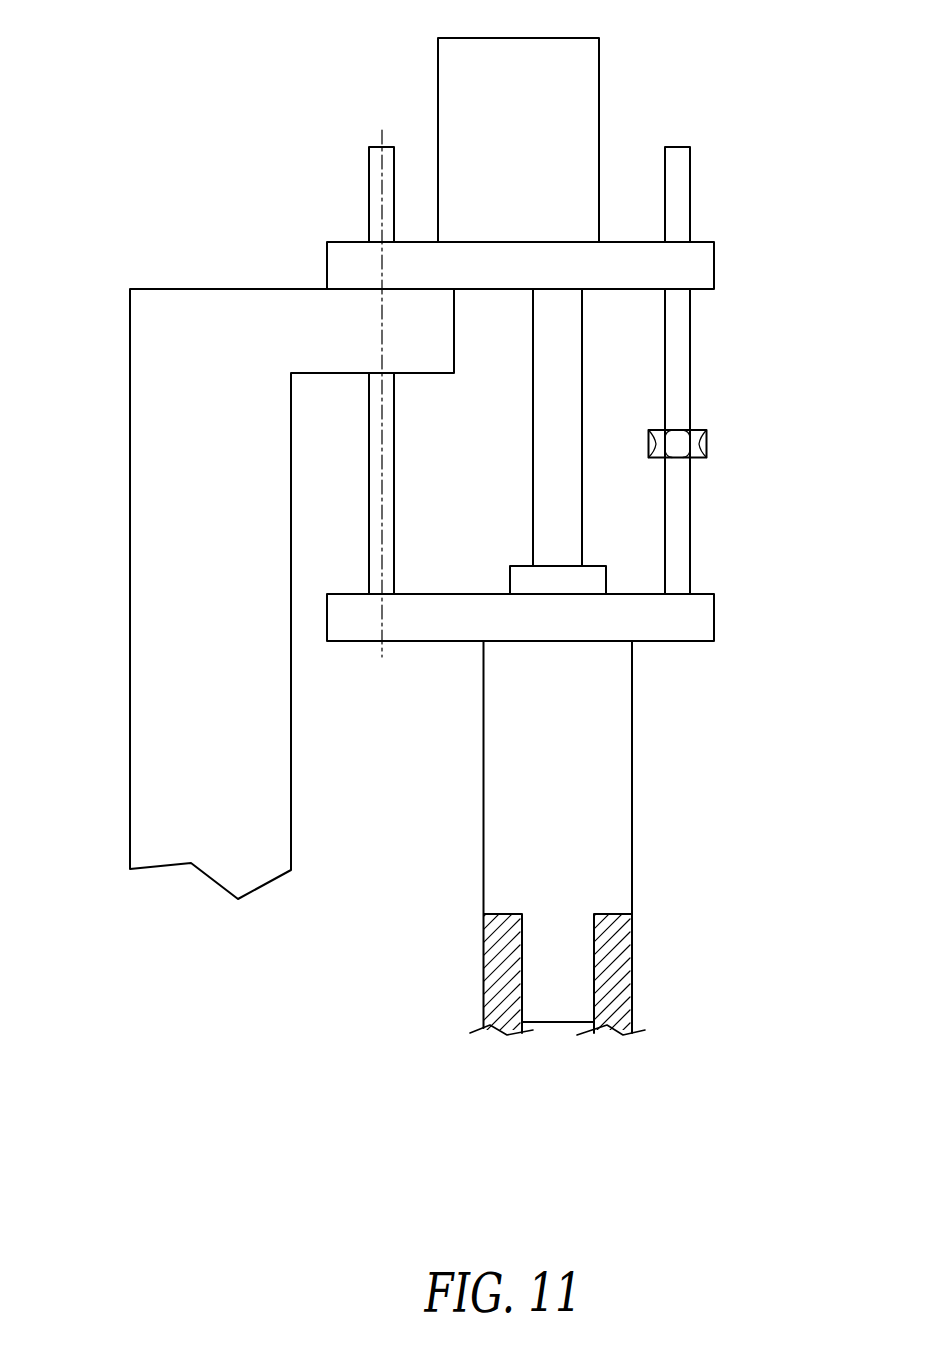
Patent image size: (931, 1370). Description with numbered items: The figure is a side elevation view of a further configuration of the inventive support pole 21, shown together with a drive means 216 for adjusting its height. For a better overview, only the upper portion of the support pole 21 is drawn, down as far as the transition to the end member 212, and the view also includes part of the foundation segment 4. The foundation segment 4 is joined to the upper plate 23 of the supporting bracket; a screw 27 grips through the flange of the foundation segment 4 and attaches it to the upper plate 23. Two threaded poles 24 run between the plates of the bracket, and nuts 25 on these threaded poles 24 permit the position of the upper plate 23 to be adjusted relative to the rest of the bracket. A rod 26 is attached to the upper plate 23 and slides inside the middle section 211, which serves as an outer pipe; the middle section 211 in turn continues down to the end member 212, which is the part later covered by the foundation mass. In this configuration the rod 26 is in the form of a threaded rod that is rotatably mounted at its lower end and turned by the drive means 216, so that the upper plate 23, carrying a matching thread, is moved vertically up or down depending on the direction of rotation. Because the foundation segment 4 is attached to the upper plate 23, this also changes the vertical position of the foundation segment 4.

The foundation segment 4 is at (192, 628).
The support pole 21 is at (610, 1010).
The upper plate 23 is at (703, 262).
The threaded pole 24 is at (675, 172).
The nut 25 is at (700, 442).
The rod 26 is at (543, 452).
The screw 27 is at (375, 172).
The middle section 211 is at (543, 800).
The end member 212 is at (640, 980).
The drive means 216 is at (495, 137).